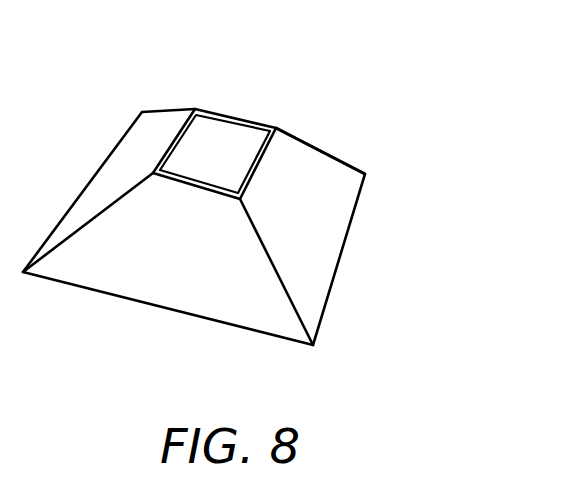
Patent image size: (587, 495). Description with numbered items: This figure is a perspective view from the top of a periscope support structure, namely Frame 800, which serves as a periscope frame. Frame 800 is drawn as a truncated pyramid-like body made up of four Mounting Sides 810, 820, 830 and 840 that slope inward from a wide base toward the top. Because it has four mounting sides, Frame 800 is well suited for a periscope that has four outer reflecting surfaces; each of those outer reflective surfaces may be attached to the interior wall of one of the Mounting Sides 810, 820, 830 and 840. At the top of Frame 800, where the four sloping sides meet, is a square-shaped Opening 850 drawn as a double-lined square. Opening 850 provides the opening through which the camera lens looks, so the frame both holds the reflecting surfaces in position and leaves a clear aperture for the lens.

The frame 800 is at (389, 63).
The mounting side 810 is at (316, 204).
The mounting side 820 is at (158, 268).
The mounting side 830 is at (137, 147).
The mounting side 840 is at (312, 140).
The opening 850 is at (225, 138).